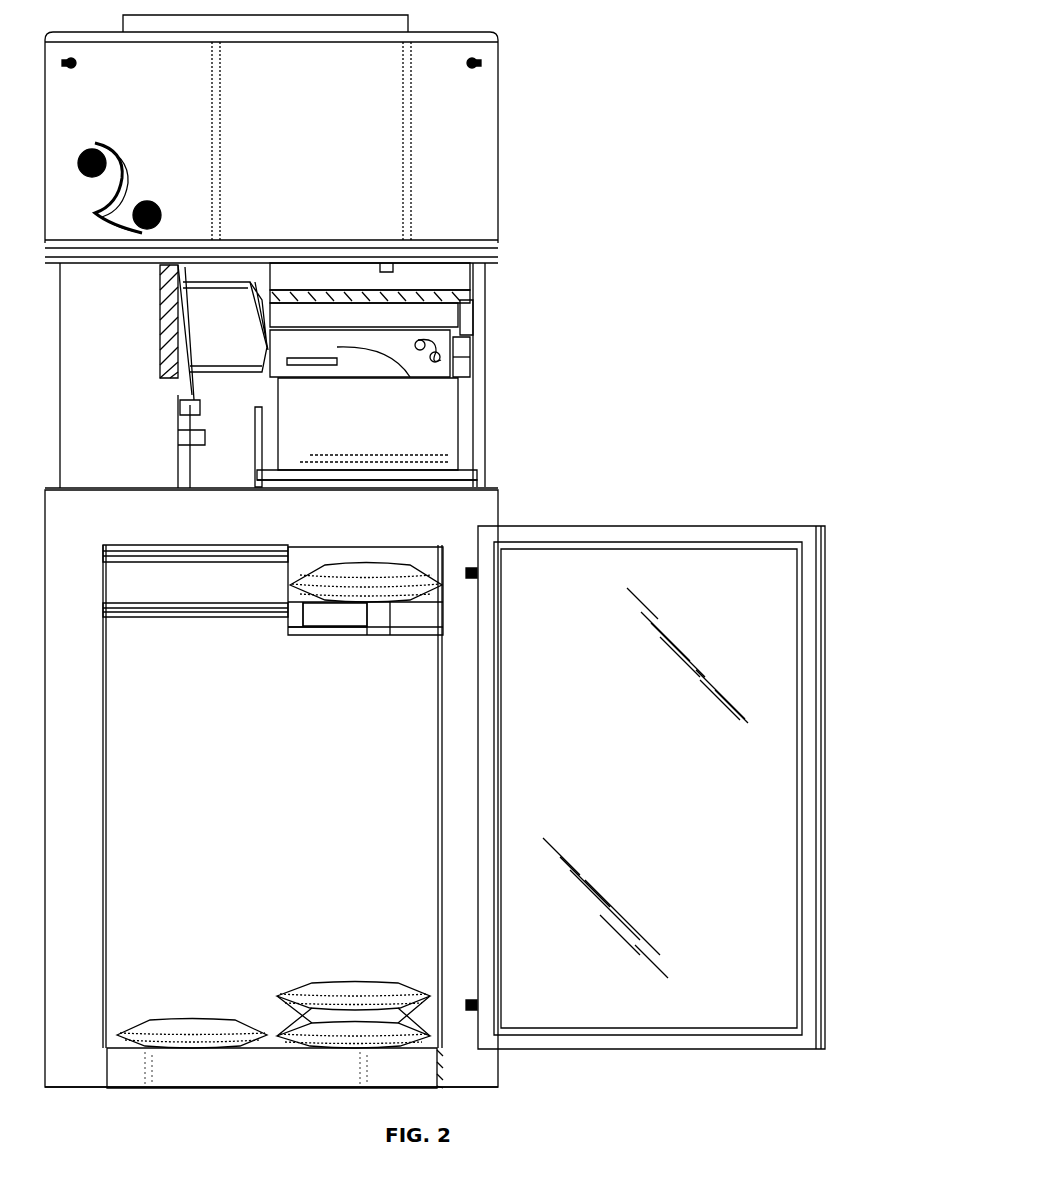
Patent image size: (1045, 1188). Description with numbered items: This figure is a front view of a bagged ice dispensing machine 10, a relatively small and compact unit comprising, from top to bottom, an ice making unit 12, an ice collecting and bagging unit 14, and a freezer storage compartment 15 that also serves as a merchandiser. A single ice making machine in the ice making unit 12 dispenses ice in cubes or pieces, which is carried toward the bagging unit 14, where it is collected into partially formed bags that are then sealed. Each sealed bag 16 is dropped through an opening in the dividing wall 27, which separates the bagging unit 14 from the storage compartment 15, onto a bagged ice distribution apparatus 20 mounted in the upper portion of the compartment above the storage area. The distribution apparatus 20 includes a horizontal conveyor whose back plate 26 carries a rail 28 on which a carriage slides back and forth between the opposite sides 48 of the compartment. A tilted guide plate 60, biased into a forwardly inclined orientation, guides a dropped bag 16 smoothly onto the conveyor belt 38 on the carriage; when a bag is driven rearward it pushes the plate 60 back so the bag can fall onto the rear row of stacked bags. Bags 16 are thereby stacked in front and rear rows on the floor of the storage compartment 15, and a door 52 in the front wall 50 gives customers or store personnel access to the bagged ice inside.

The bagged ice dispensing machine 10 is at (664, 84).
The ice making unit 12 is at (483, 152).
The ice collecting and bagging unit 14 is at (477, 403).
The freezer storage compartment 15 is at (130, 887).
The sealed bag 16 is at (368, 572).
The bagged ice distribution apparatus 20 is at (282, 620).
The back plate 26 is at (197, 549).
The dividing wall 27 is at (497, 503).
The rail 28 is at (160, 613).
The conveyor belt 38 is at (337, 614).
The opposite sides 48 is at (106, 815).
The front wall 50 is at (82, 1076).
The door 52 is at (634, 565).
The tilted guide plate 60 is at (333, 552).